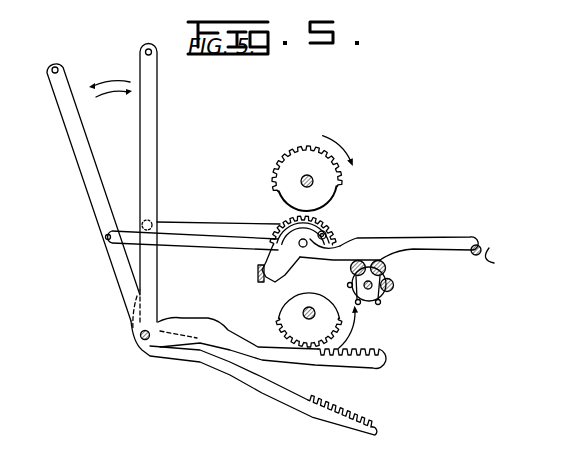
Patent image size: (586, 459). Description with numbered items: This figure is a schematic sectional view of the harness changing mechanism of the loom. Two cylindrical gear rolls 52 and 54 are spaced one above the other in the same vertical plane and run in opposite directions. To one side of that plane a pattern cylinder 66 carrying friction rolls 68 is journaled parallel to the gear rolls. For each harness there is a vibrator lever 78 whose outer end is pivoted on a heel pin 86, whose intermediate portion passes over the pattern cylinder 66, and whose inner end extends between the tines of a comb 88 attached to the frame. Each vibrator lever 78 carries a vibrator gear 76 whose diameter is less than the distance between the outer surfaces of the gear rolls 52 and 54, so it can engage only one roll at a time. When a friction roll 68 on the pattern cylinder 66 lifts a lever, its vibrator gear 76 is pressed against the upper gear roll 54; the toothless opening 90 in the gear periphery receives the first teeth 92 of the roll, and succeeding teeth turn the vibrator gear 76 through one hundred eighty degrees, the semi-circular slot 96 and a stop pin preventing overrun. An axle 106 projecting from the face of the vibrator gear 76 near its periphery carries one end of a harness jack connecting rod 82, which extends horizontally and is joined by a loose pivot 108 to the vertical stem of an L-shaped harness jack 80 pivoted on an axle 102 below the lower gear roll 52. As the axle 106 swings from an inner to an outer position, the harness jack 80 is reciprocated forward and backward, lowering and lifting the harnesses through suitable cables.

The lower cylindrical gear roll 52 is at (290, 302).
The upper cylindrical gear roll 54 is at (273, 184).
The pattern cylinder 66 is at (381, 300).
The friction rolls 68 is at (393, 278).
The vibrator gear 76 is at (332, 238).
The vibrator lever 78 is at (413, 240).
The harness jack 80 is at (96, 183).
The harness jack connecting rod 82 is at (215, 243).
The heel pin 86 is at (489, 263).
The comb 88 is at (257, 281).
The opening 90 is at (324, 216).
The teeth 92 is at (338, 200).
The semi-circular slot 96 is at (280, 250).
The axle 102 is at (141, 337).
The axle 106 is at (330, 226).
The loose pivot 108 is at (104, 238).